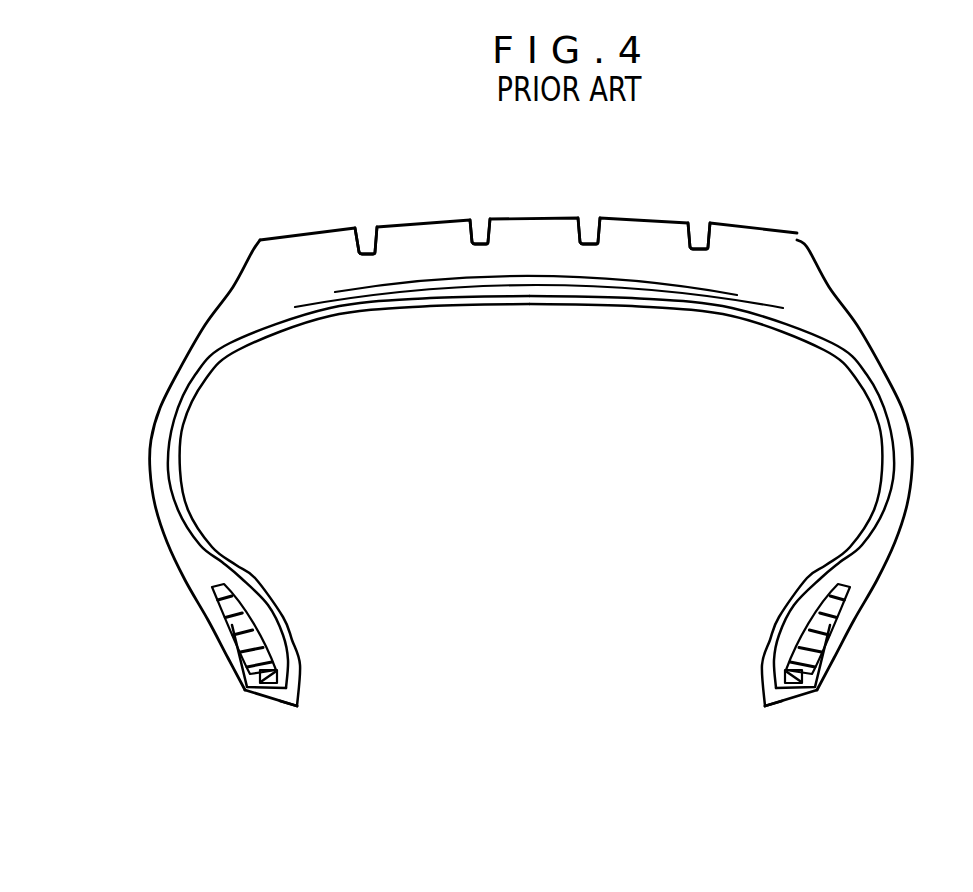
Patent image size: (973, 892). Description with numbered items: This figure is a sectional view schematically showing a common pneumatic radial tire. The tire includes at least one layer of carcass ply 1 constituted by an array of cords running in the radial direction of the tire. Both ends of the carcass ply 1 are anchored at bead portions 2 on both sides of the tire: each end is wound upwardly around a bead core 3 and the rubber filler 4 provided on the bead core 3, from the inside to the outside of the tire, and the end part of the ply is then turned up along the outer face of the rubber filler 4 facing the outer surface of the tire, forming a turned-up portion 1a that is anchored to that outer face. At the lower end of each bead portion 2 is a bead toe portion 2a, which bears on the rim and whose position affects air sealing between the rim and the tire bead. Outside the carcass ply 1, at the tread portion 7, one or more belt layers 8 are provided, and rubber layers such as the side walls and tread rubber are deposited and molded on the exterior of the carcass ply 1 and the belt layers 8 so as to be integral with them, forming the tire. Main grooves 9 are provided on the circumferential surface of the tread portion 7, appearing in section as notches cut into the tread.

The carcass ply 1 is at (853, 370).
The turned-up portion 1a is at (243, 665).
The bead portion 2 is at (305, 694).
The bead toe portion 2a is at (299, 708).
The bead core 3 is at (267, 683).
The rubber filler 4 is at (235, 622).
The tread portion 7 is at (740, 238).
The belt layer 8 is at (622, 292).
The main grooves 9 is at (365, 235).